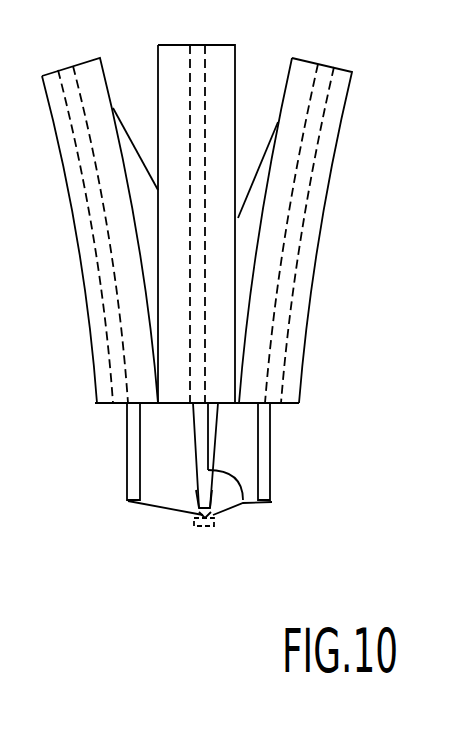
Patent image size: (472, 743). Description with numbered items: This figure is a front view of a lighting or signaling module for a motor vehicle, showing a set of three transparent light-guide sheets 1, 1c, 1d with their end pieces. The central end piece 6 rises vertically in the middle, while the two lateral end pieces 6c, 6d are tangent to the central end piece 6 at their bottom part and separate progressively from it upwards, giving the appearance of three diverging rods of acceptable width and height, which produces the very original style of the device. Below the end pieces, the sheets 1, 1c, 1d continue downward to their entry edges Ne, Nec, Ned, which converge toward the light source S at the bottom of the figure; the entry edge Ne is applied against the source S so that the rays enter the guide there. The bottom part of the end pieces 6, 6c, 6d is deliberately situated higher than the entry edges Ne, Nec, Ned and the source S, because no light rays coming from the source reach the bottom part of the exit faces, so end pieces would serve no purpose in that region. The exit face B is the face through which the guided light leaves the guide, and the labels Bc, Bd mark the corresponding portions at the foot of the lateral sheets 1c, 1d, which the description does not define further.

The sheet 1 is at (196, 99).
The central end piece 6 is at (236, 78).
The sheet 1d is at (80, 110).
The sheet 1c is at (310, 135).
The end piece 6d is at (78, 203).
The end piece 6c is at (309, 242).
The strip of branch d Bd is at (130, 422).
The strip of branch c Bc is at (268, 423).
The entry edge Ned is at (160, 513).
The entry edge Nec is at (262, 506).
The exit face B is at (192, 486).
The light source S is at (197, 530).
The entry edge Ne is at (222, 514).